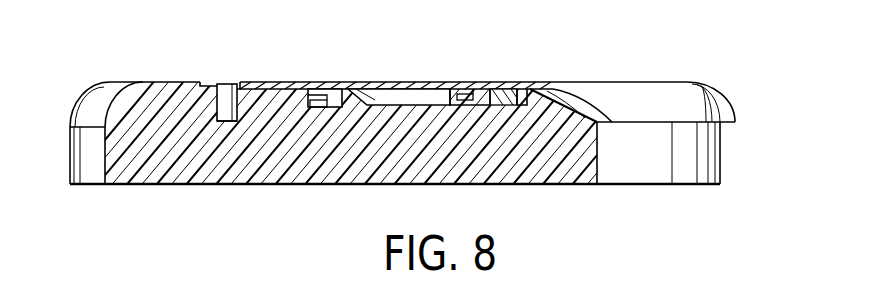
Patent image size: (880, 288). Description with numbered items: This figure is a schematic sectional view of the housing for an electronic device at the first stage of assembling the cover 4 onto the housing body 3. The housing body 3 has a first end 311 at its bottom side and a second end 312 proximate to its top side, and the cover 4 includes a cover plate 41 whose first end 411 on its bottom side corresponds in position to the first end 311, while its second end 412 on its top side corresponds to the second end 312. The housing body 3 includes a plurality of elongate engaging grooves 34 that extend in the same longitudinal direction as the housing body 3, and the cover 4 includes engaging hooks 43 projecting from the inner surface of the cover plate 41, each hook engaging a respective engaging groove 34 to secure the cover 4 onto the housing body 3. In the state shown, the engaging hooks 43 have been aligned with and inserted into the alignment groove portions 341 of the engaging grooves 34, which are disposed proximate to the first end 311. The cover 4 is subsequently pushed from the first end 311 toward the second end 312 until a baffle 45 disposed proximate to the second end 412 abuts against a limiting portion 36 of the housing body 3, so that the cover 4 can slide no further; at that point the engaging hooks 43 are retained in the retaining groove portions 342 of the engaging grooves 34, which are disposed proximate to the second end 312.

The housing body 3 is at (153, 195).
The first end 311 is at (724, 132).
The second end 312 is at (222, 127).
The engaging groove 34 is at (322, 117).
The alignment groove portion 341 is at (383, 97).
The retaining groove portion 342 is at (305, 95).
The limiting portion 36 is at (226, 101).
The cover 4 is at (647, 68).
The cover plate 41 is at (673, 82).
The first end 411 is at (737, 111).
The second end 412 is at (213, 86).
The engaging hook 43 is at (350, 100).
The baffle 45 is at (240, 105).